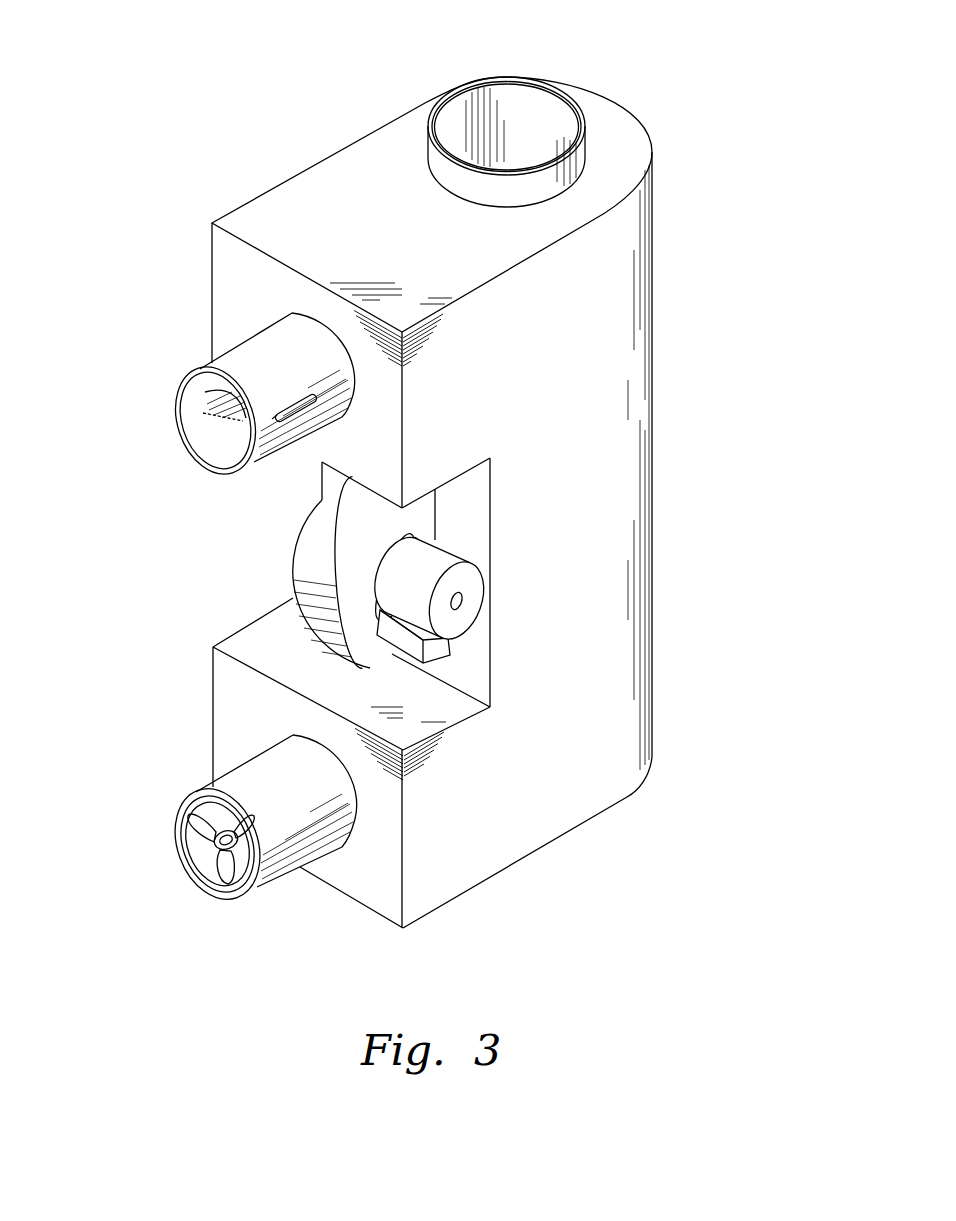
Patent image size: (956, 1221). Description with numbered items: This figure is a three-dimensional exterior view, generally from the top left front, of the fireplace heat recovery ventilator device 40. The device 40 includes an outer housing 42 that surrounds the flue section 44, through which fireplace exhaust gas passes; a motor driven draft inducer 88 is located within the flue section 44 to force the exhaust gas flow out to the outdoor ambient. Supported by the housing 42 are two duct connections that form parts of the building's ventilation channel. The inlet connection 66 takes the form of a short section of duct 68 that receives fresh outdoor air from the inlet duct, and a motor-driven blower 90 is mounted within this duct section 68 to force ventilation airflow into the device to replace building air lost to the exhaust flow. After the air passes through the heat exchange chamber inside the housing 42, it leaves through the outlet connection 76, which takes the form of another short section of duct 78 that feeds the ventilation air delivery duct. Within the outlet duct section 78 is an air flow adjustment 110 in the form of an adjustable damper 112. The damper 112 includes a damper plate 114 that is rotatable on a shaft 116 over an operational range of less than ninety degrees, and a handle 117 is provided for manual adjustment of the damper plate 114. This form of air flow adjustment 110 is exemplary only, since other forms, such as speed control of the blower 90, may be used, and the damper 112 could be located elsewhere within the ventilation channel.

The heat recovery ventilator device 40 is at (712, 352).
The housing 42 is at (588, 612).
The flue section 44 is at (548, 121).
The inlet connection 66 is at (207, 855).
The short section of duct 68 is at (277, 850).
The outlet connection 76 is at (176, 392).
The short section of duct 78 is at (253, 362).
The motor driven draft inducer 88 is at (383, 545).
The motor-driven blower 90 is at (222, 838).
The air flow adjustment 110 is at (147, 485).
The adjustable damper 112 is at (230, 430).
The damper plate 114 is at (212, 421).
The shaft 116 is at (206, 368).
The handle 117 is at (314, 397).